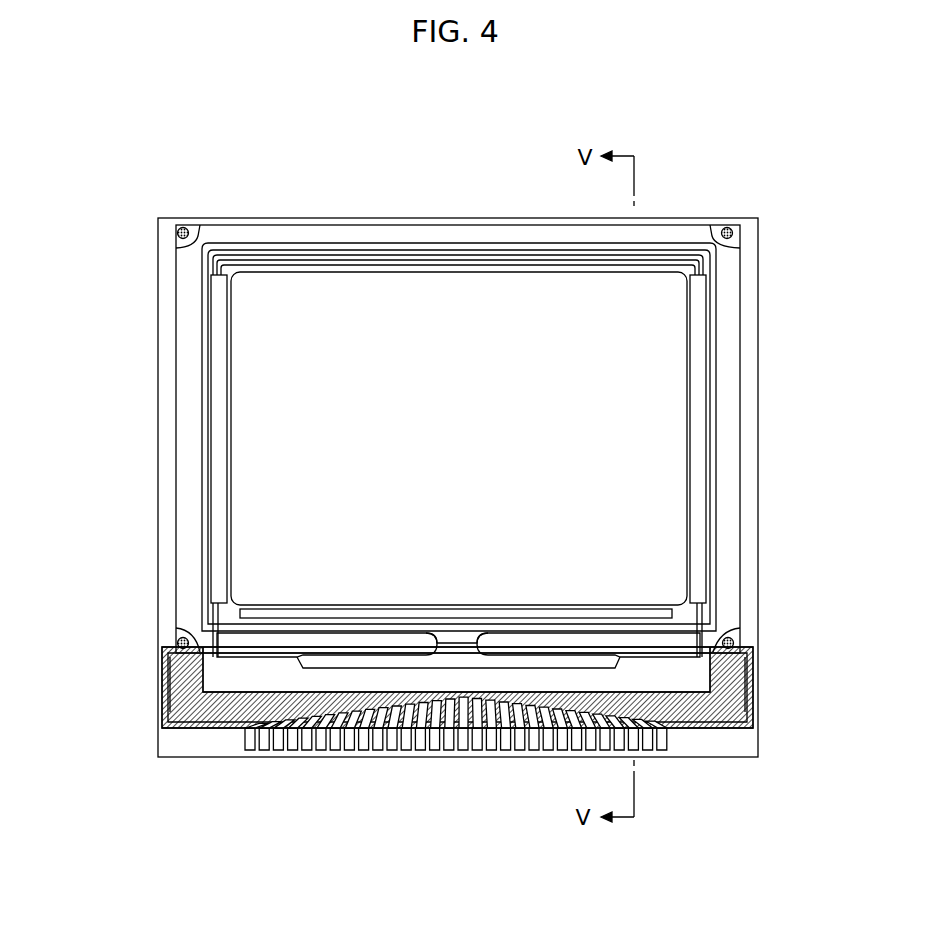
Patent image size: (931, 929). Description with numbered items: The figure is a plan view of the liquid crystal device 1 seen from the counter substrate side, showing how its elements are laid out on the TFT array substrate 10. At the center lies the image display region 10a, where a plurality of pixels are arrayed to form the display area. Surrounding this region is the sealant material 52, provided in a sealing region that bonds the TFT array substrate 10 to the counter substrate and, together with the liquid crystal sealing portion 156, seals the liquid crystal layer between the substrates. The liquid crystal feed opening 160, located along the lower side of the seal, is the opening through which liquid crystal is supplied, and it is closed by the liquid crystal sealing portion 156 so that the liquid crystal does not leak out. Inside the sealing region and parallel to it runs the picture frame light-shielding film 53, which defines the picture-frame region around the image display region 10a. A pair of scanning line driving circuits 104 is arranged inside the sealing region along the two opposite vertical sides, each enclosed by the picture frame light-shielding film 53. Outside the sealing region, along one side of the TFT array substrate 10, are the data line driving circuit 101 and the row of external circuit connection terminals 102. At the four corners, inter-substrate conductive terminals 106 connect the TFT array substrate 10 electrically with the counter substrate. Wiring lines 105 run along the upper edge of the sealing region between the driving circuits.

The liquid crystal device 1 is at (501, 186).
The TFT array substrate 10 is at (283, 217).
The image display region 10a is at (275, 391).
The sealant material 52 is at (735, 371).
The picture frame light-shielding film 53 is at (718, 607).
The data line driving circuit 101 is at (228, 684).
The external circuit connection terminals 102 is at (297, 735).
The scanning line driving circuits 104 is at (214, 447).
The wiring lines 105 is at (343, 248).
The inter-substrate conductive terminals 106 is at (218, 222).
The liquid crystal sealing portion 156 is at (432, 661).
The liquid crystal feed opening 160 is at (470, 638).